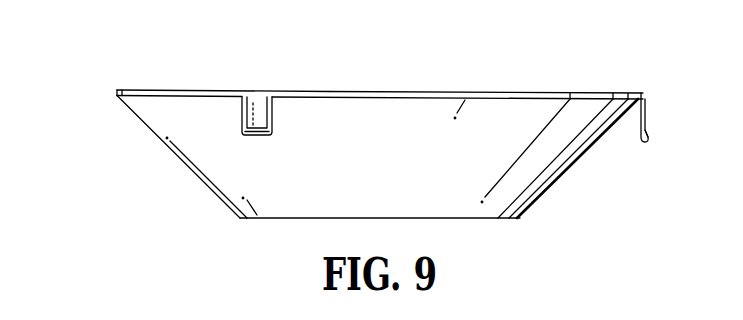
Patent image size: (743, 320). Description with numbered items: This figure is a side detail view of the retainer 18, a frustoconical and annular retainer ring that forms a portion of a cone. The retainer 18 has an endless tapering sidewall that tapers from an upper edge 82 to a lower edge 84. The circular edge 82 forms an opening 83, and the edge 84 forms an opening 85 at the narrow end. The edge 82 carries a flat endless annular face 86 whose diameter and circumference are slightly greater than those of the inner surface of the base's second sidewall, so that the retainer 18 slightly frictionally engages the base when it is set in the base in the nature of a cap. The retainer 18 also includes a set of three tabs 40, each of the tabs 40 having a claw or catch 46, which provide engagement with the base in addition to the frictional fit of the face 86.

The retainer ring 18 is at (173, 152).
The tabs 40 is at (240, 113).
The catch 46 is at (647, 131).
The edge 82 is at (518, 92).
The opening 83 is at (435, 67).
The edge 84 is at (483, 218).
The opening 85 is at (262, 232).
The flat endless annular face 86 is at (330, 92).